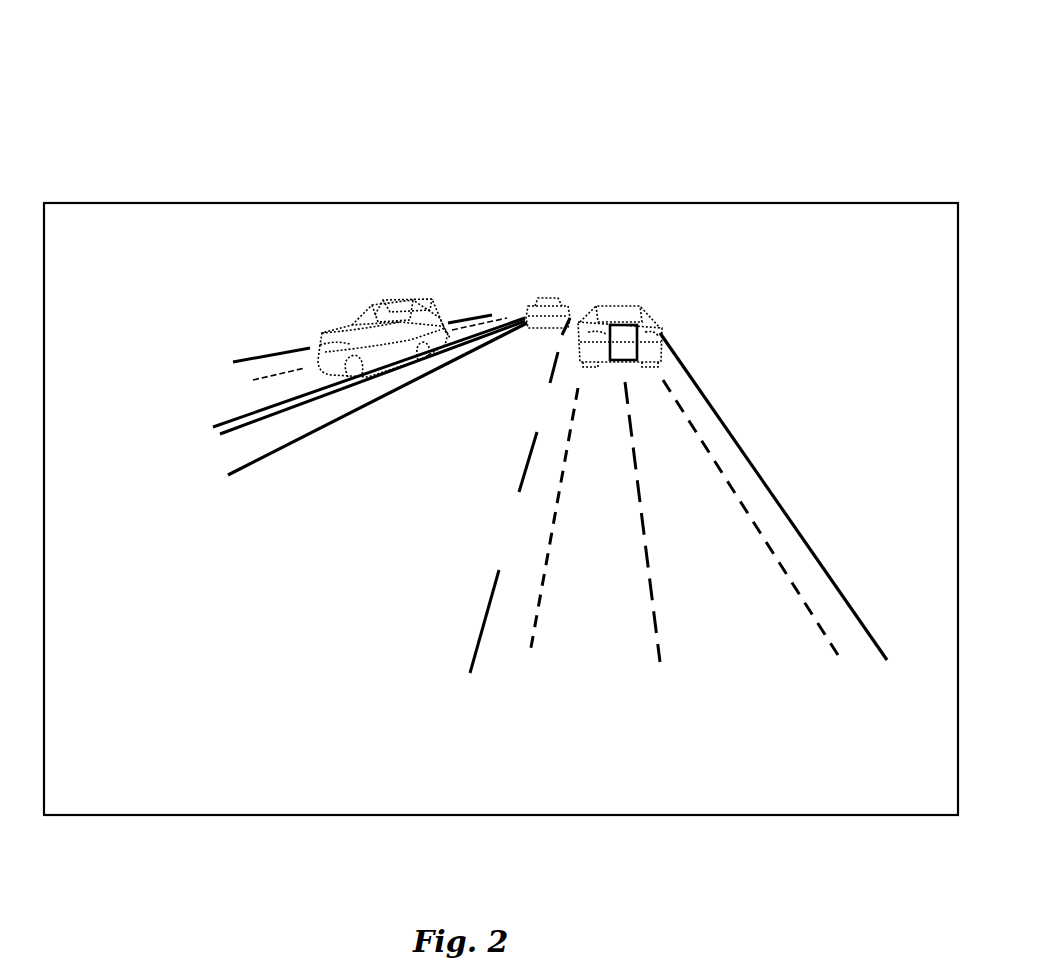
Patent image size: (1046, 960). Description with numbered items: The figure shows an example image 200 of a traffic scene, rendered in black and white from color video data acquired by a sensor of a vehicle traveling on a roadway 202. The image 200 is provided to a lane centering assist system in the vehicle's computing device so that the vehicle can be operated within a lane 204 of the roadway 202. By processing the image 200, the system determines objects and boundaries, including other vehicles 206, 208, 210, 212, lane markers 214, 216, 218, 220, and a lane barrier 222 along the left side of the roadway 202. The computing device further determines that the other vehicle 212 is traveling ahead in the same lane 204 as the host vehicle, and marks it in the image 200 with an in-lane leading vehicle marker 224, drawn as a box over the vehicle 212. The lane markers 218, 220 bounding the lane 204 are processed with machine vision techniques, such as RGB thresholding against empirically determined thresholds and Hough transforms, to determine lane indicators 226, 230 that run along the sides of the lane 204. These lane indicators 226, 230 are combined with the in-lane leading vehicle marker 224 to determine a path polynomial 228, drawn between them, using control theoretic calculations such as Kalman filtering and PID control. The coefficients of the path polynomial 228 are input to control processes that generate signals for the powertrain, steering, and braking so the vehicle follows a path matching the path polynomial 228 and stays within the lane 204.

The image 200 is at (529, 41).
The roadway 202 is at (385, 660).
The lane 204 is at (732, 580).
The other vehicle 206 is at (355, 322).
The other vehicle 208 is at (415, 298).
The other vehicle 210 is at (545, 298).
The other vehicle 212 is at (617, 304).
The lane marker 214 is at (267, 356).
The lane marker 216 is at (262, 381).
The lane marker 218 is at (534, 432).
The lane marker 220 is at (737, 438).
The lane barrier 222 is at (300, 438).
The in-lane leading vehicle marker 224 is at (633, 325).
The lane indicator 226 is at (537, 615).
The path polynomial 228 is at (657, 623).
The lane indicator 230 is at (802, 617).